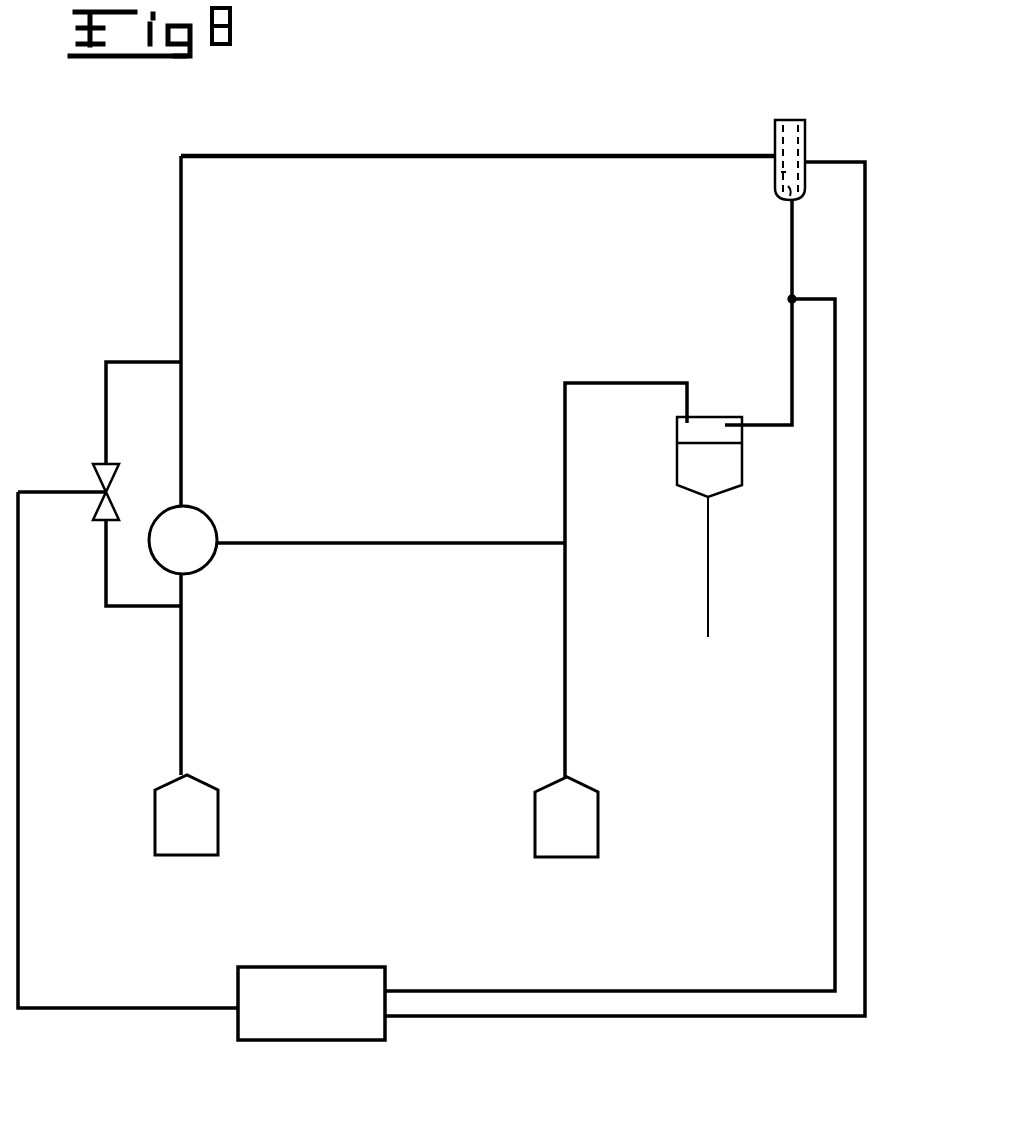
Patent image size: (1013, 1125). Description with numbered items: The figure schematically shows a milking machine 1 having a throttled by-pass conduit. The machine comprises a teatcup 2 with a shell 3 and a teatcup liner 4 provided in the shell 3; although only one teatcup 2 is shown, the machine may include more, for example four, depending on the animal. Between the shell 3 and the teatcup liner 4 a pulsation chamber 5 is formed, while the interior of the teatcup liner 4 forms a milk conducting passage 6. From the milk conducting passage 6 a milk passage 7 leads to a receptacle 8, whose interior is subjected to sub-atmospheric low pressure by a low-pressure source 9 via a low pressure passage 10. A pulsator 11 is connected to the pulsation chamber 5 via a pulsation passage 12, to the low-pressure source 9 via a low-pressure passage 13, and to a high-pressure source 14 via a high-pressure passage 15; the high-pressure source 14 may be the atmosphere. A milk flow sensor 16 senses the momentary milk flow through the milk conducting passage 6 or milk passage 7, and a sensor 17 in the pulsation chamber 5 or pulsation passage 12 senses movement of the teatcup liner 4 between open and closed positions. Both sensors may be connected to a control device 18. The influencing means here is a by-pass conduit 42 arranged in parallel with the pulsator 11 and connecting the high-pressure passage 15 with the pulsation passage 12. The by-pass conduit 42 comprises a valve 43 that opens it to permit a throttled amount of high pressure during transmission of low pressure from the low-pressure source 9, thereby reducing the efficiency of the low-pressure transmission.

The milking machine 1 is at (503, 122).
The teatcup 2 is at (770, 168).
The shell 3 is at (805, 130).
The teatcup liner 4 is at (783, 172).
The pulsation chamber 5 is at (775, 135).
The milk conducting passage 6 is at (788, 192).
The milk passage 7 is at (792, 358).
The receptacle 8 is at (710, 472).
The low-pressure source 9 is at (582, 806).
The low pressure passage 10 is at (566, 480).
The pulsator 11 is at (191, 530).
The pulsation passage 12 is at (525, 156).
The low-pressure passage 13 is at (482, 543).
The high-pressure source 14 is at (168, 826).
The high-pressure passage 15 is at (181, 672).
The milk flow sensor 16 is at (792, 299).
The sensor 17 is at (802, 160).
The control device 18 is at (362, 1030).
The by-pass conduit 42 is at (106, 412).
The valve 43 is at (110, 508).